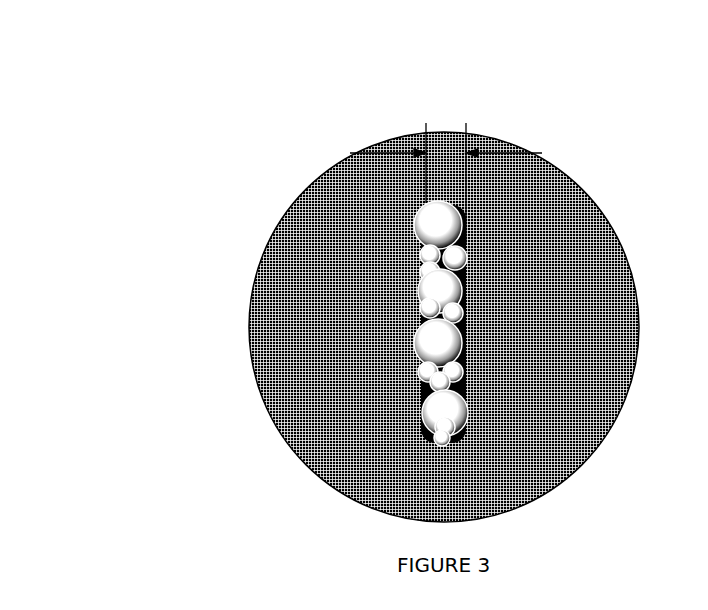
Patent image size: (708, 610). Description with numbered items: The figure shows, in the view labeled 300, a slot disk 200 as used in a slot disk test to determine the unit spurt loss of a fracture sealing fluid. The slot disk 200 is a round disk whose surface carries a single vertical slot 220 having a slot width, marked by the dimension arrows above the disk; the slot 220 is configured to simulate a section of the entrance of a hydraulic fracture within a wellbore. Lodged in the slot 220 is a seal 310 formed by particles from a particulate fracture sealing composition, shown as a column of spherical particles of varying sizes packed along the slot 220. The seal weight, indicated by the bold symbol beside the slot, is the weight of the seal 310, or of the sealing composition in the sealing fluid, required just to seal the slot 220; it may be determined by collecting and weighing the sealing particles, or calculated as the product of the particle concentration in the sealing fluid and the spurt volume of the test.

The separation assembly 300 is at (239, 87).
The slot disk 200 is at (338, 217).
The slot 220 is at (465, 268).
The seal 310 is at (418, 292).